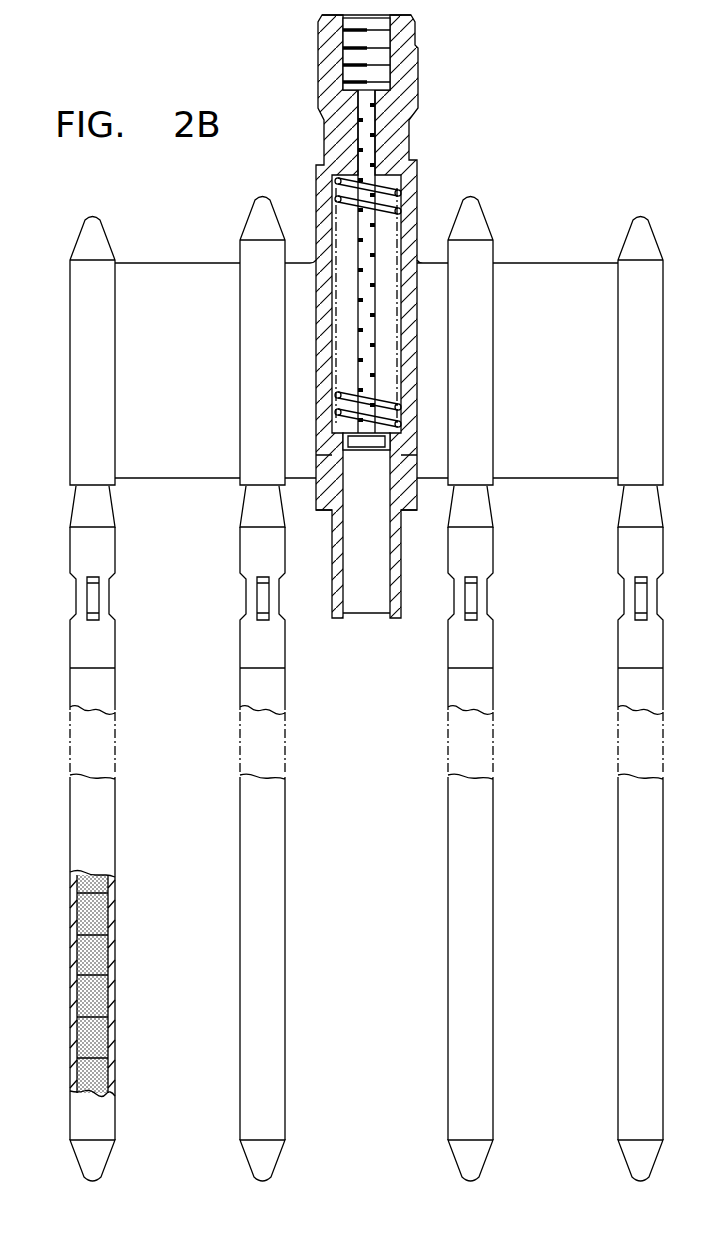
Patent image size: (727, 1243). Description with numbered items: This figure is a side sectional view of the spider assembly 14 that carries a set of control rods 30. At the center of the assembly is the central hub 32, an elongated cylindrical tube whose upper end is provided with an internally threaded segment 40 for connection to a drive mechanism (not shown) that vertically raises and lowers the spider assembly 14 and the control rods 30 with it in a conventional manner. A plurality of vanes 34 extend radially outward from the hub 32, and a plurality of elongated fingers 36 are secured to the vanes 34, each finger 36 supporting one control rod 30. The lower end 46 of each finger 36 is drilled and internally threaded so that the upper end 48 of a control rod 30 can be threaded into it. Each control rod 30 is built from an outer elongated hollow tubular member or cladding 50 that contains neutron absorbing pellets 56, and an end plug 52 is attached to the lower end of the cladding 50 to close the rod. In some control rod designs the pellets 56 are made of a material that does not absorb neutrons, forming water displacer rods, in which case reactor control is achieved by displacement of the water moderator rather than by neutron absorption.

The spider assembly 14 is at (509, 130).
The control rod 30 is at (247, 837).
The central hub 32 is at (420, 190).
The vane 34 is at (198, 265).
The finger 36 is at (105, 295).
The internally threaded segment 40 is at (332, 17).
The lower end of finger 46 is at (98, 476).
The upper end of control rod 48 is at (102, 515).
The cladding 50 is at (240, 690).
The end plug 52 is at (240, 1152).
The neutron absorbing pellets 56 is at (95, 995).